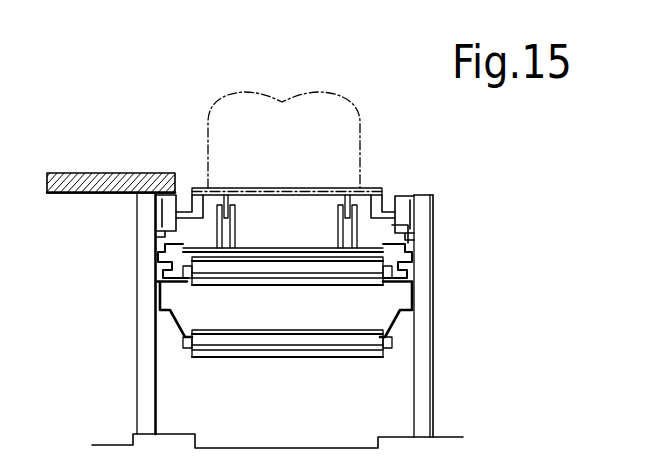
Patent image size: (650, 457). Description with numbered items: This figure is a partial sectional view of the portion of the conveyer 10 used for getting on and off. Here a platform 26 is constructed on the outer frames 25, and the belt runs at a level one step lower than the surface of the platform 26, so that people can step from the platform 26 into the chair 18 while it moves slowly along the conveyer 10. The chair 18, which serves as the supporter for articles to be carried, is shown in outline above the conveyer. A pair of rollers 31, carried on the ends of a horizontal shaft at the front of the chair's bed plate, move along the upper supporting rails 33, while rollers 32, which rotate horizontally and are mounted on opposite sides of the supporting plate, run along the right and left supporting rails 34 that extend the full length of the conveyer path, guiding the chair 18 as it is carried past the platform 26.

The conveyer for getting on and off 10 is at (297, 257).
The chair 18 is at (232, 117).
The outer frames 25 is at (143, 328).
The platform 26 is at (122, 173).
The rollers 31 is at (403, 220).
The rollers 32 is at (385, 258).
The upper supporting rails 33 is at (163, 218).
The supporting rails 34 is at (168, 248).